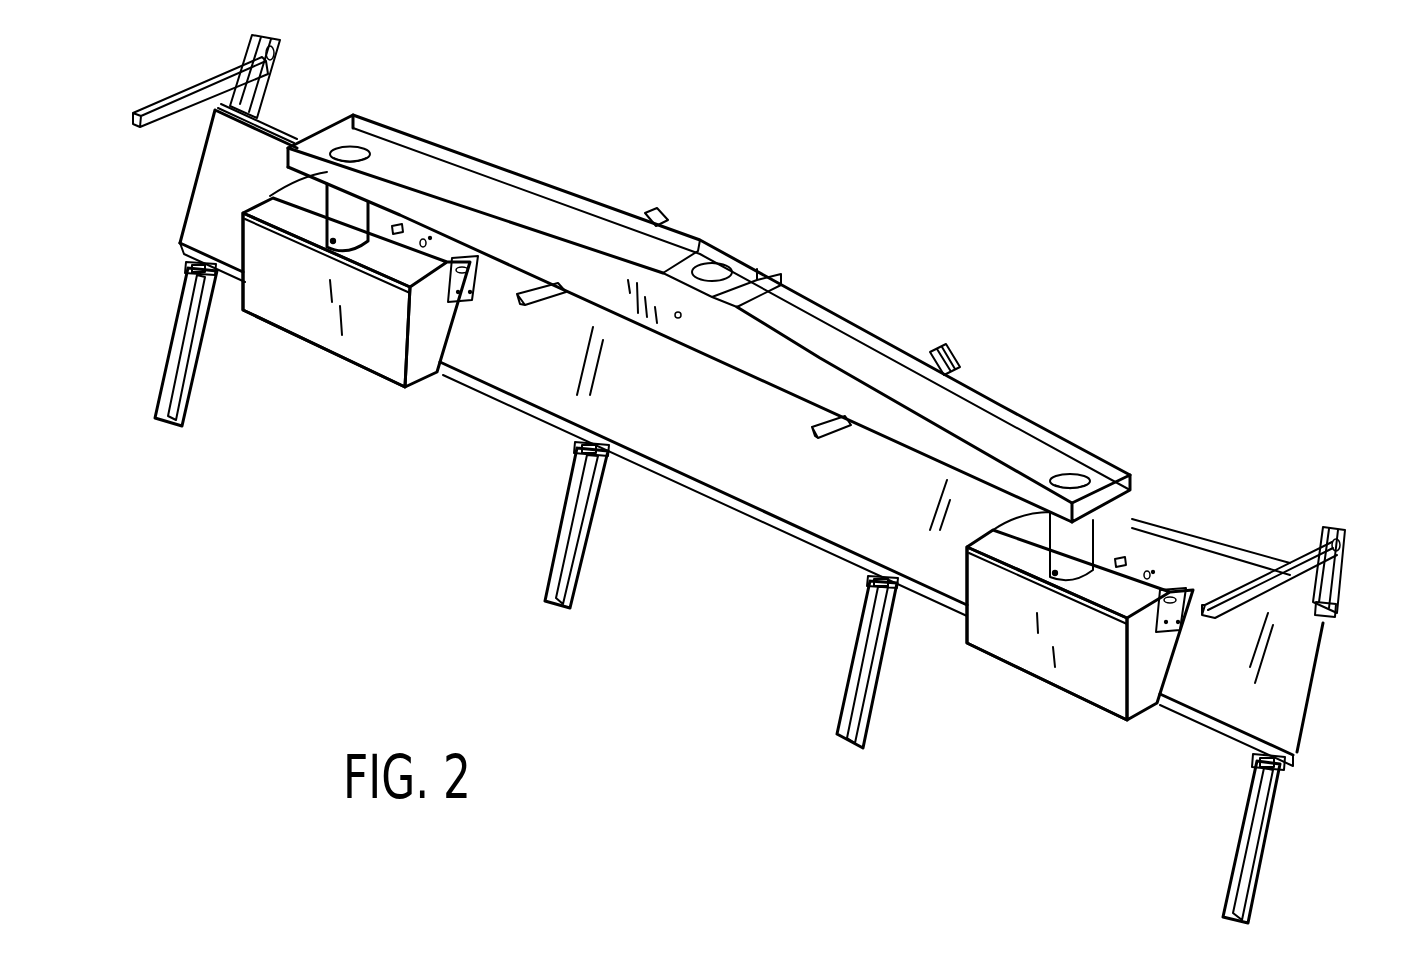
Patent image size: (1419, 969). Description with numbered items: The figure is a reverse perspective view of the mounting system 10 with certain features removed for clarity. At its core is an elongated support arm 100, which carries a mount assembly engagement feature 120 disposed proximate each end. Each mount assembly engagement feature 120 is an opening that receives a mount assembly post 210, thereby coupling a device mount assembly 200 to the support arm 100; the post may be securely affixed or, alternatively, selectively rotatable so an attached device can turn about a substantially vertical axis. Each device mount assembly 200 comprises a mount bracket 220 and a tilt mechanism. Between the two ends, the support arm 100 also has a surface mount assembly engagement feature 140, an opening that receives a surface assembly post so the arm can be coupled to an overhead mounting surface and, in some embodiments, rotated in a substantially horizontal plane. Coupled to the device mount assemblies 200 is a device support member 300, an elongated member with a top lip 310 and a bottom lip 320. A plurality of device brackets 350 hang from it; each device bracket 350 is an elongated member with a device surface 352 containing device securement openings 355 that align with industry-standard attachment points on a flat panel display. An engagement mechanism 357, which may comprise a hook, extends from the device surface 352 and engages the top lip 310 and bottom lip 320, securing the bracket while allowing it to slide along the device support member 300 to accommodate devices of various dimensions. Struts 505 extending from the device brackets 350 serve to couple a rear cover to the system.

The mounting system 10 is at (804, 162).
The support arm 100 is at (1000, 430).
The mount assembly engagement feature 120 is at (366, 152).
The surface mount assembly engagement feature 140 is at (713, 272).
The device mount assembly 200 is at (377, 360).
The mount assembly post 210 is at (333, 222).
The mount bracket 220 is at (277, 313).
The device support member 300 is at (1283, 718).
The top lip 310 is at (288, 122).
The bottom lip 320 is at (1227, 737).
The device bracket 350 is at (166, 428).
The device surface 352 is at (1257, 848).
The device securement openings 355 is at (188, 323).
The engagement mechanism 357 is at (963, 362).
The strut 505 is at (198, 88).